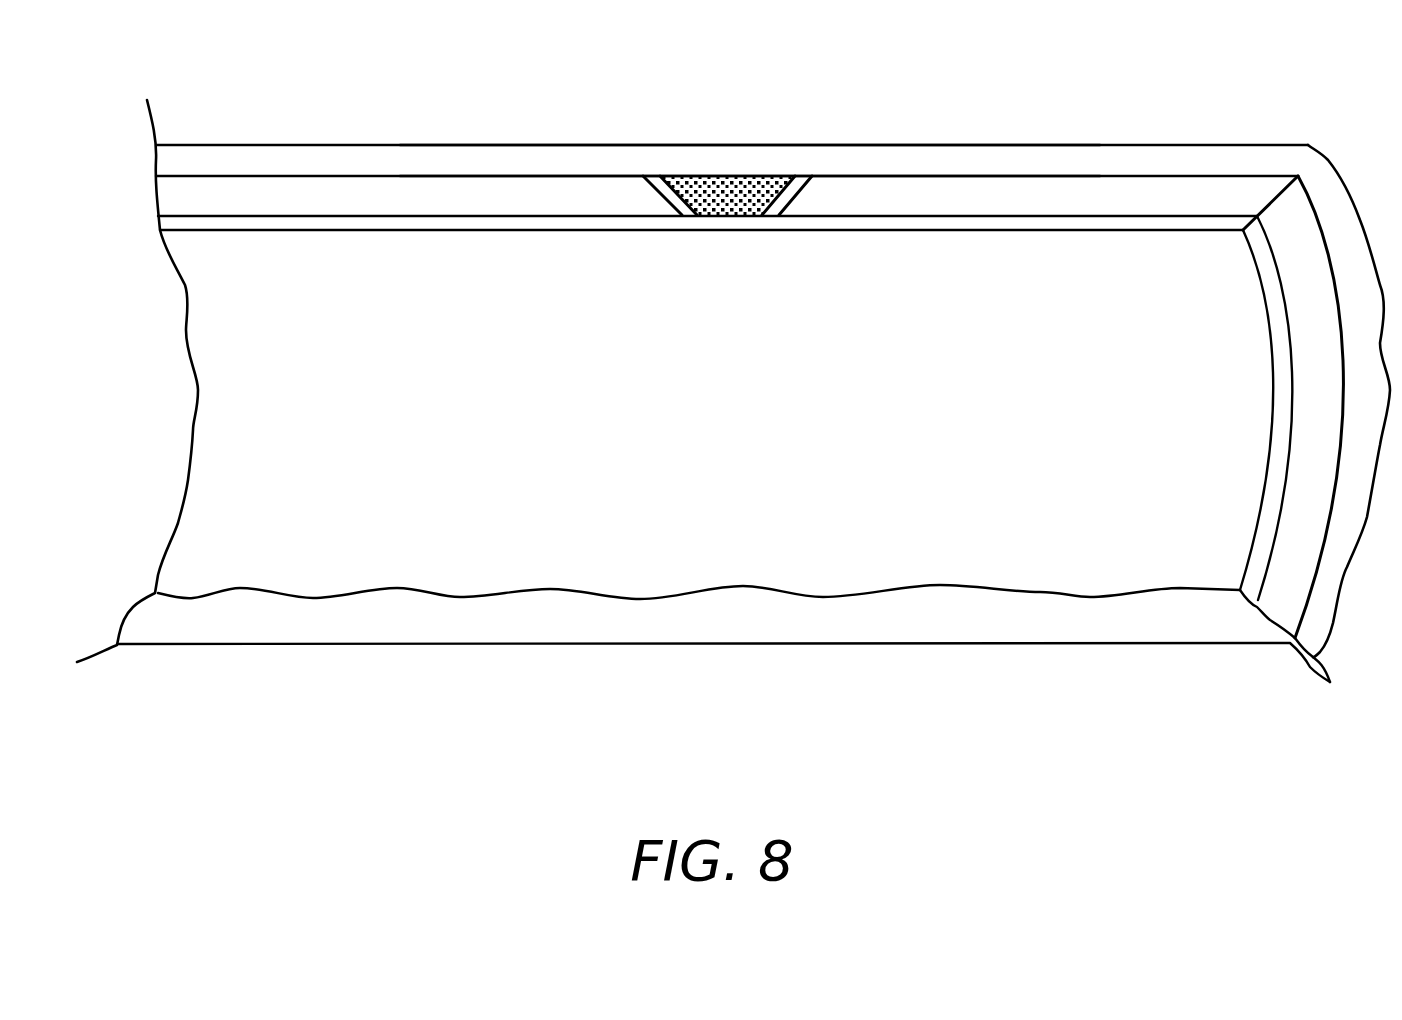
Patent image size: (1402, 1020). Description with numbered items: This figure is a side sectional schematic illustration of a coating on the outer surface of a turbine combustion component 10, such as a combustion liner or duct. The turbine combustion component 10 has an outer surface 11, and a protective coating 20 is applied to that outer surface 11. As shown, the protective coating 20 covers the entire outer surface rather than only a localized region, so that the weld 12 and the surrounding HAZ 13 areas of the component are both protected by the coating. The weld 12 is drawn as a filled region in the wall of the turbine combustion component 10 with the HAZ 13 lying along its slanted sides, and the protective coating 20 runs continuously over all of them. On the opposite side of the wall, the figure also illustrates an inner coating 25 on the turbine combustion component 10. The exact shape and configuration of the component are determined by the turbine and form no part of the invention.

The turbine combustion component 10 is at (230, 190).
The outer surface 11 is at (362, 177).
The protective coating 20 is at (555, 155).
The inner coating 25 is at (342, 228).
The weld 12 is at (740, 182).
The HAZ 13 is at (668, 208).